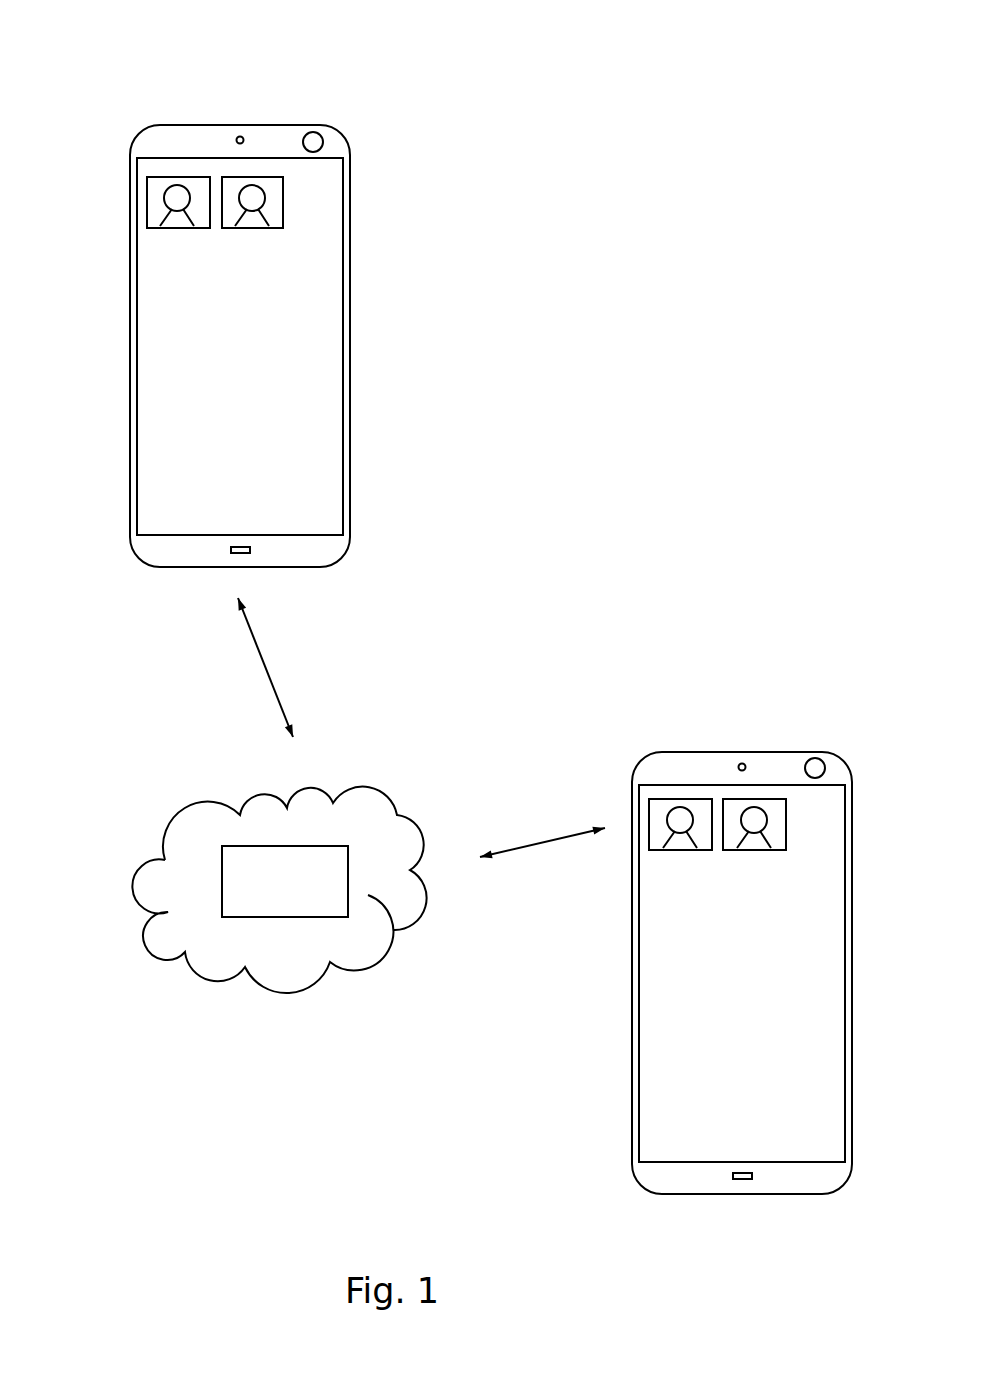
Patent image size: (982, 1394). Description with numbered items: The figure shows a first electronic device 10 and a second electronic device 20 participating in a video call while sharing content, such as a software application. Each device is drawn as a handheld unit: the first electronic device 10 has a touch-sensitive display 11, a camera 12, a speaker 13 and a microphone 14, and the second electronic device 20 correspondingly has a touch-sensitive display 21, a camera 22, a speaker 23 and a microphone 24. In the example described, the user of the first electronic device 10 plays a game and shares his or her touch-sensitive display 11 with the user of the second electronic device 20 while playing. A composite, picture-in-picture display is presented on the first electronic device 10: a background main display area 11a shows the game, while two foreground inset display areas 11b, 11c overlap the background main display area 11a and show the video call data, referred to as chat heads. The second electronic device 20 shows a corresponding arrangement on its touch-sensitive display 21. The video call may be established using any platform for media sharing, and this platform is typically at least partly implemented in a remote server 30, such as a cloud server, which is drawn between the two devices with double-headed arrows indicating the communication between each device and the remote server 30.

The first electronic device 10 is at (135, 76).
The touch-sensitive display 11 is at (150, 537).
The background main display area 11a is at (152, 385).
The foreground inset display area 11b is at (147, 205).
The foreground inset display area 11c is at (283, 208).
The camera 12 is at (320, 134).
The speaker 13 is at (243, 136).
The microphone 14 is at (244, 556).
The second electronic device 20 is at (630, 702).
The touch-sensitive display 21 is at (650, 1160).
The camera 22 is at (821, 760).
The speaker 23 is at (745, 762).
The microphone 24 is at (743, 1180).
The remote server 30 is at (268, 899).